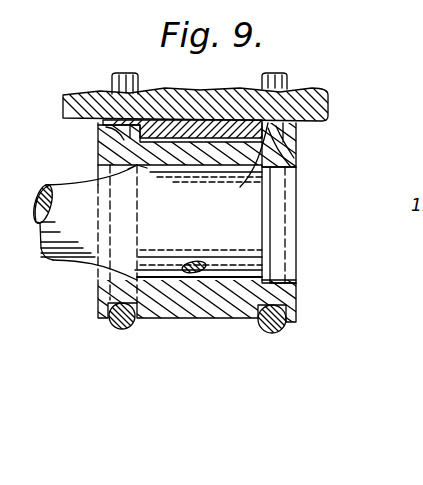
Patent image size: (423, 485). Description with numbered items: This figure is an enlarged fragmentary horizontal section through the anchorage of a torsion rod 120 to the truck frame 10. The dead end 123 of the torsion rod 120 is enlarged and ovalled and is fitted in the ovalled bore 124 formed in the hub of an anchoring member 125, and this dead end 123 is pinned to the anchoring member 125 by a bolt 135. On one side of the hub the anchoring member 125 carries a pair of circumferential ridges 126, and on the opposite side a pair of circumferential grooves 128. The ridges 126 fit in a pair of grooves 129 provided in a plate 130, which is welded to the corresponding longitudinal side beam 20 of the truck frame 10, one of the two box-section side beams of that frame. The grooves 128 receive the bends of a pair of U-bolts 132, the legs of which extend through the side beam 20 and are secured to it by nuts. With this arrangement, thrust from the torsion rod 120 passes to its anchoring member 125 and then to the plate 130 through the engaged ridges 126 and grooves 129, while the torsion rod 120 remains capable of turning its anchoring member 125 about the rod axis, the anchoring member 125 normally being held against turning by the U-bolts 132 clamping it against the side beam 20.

The truck frame 10 is at (62, 97).
The longitudinal side beam 20 is at (331, 93).
The torsion rod 120 is at (46, 186).
The dead end 123 is at (262, 228).
The ovalled bore 124 is at (283, 168).
The anchoring member 125 is at (197, 320).
The circumferential ridges 126 is at (103, 144).
The circumferential grooves 128 is at (112, 314).
The grooves 129 is at (138, 166).
The plate 130 is at (192, 127).
The U-bolts 132 is at (118, 82).
The bolt 135 is at (193, 261).